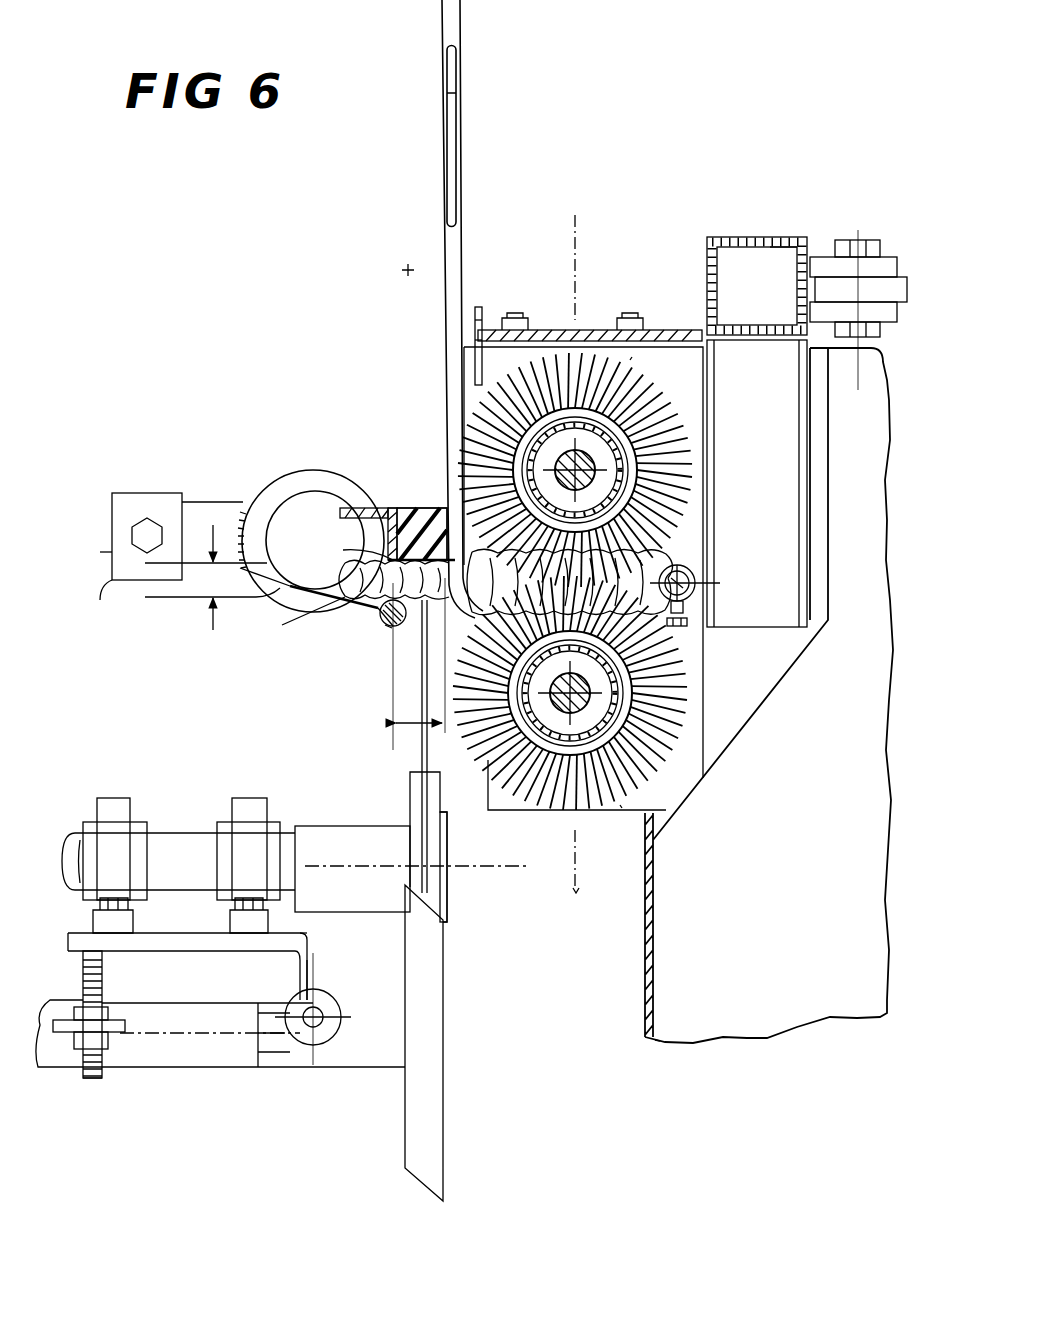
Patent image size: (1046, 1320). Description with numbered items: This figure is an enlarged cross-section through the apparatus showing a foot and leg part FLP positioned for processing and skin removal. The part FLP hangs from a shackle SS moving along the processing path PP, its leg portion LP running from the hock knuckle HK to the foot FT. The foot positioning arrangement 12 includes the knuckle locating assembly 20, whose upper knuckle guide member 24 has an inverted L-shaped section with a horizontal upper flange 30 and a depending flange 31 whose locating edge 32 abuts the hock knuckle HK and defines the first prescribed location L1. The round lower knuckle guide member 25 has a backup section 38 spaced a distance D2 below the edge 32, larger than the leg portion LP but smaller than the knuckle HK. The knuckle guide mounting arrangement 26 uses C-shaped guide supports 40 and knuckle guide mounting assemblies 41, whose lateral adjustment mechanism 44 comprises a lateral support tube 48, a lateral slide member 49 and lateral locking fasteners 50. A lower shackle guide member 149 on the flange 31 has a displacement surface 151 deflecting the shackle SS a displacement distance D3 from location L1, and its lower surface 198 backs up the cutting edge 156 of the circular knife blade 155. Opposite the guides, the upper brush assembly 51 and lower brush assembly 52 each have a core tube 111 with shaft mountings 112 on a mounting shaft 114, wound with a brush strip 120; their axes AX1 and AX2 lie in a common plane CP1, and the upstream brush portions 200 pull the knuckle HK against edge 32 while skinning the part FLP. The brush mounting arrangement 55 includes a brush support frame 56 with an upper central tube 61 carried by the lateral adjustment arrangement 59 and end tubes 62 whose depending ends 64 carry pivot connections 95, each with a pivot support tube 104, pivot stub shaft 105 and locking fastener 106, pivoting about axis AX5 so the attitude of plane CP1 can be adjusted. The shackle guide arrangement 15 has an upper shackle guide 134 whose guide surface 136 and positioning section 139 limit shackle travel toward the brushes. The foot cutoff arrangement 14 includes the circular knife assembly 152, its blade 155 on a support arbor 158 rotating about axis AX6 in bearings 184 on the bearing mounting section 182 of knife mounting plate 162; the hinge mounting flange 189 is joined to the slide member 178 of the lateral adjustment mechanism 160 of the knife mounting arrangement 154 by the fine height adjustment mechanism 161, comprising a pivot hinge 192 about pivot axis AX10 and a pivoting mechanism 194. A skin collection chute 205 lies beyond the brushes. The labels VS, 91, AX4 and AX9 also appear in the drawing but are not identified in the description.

The shackle SS is at (463, 62).
The processing path PP is at (386, 257).
The shackle guide arrangement 15 is at (486, 303).
The positioning section 139 is at (475, 323).
The guide surface 136 is at (476, 341).
The upper shackle guide 134 is at (556, 330).
The upper brush assembly 51 is at (706, 382).
The lower brush assembly 52 is at (556, 812).
The common plane CP1 is at (594, 562).
The brush strip 120 is at (672, 406).
The upstream brush portions 200 is at (637, 382).
The mounting shaft 114 is at (632, 440).
The shaft mountings 112 is at (626, 458).
The core tube 111 is at (618, 478).
The rotational axis of upper brush assembly AX1 is at (575, 479).
The rotational axis of lower brush assembly AX2 is at (570, 702).
The locating edge 32 is at (380, 563).
The displacement surface 151 is at (445, 575).
The C-shaped guide supports 40 is at (312, 472).
The upper flange 30 is at (368, 508).
The upper knuckle guide member 24 is at (392, 504).
The depending flange 31 is at (386, 533).
The lower shackle guide member 149 is at (402, 510).
The lower surface 198 is at (421, 522).
The first prescribed location L1 is at (360, 551).
The knuckle guide mounting assemblies 41 is at (138, 492).
The lateral locking fasteners 50 is at (157, 520).
The lateral adjustment mechanism 44 is at (182, 502).
The lateral slide member 49 is at (208, 532).
The lateral support tube 48 is at (95, 547).
The knuckle locating assembly 20 is at (318, 573).
The knuckle guide mounting arrangement 26 is at (108, 607).
The prescribed distance D2 is at (210, 600).
The foot and leg part FLP is at (306, 622).
The backup section 38 is at (380, 620).
The hock knuckle HK is at (384, 627).
The leg portion LP is at (407, 666).
The vertical surface VS is at (451, 655).
The displacement distance D3 is at (400, 722).
The lower knuckle guide member 25 is at (385, 630).
The foot positioning arrangement 12 is at (425, 440).
The brush support frame 56 is at (762, 236).
The upper central tube 61 is at (780, 246).
The end tubes 62 is at (808, 462).
The brush mounting arrangement 55 is at (823, 248).
The lateral adjustment arrangement 59 is at (850, 242).
The nut 91 is at (888, 236).
The pin axis AX4 is at (858, 376).
The depending ends 64 is at (786, 630).
The skin collection chute 205 is at (727, 1030).
The pivot connections 95 is at (696, 570).
The foot FT is at (703, 560).
The pivot support tube 104 is at (695, 571).
The pivot axis AX5 is at (703, 584).
The pivot stub shaft 105 is at (688, 594).
The locking fastener 106 is at (689, 628).
The bearings 184 is at (238, 812).
The knife support arbor 158 is at (378, 832).
The rotational axis of knife support arbor AX6 is at (417, 854).
The bearing mounting section 182 is at (198, 952).
The knife mounting plate 162 is at (309, 944).
The hinge mounting flange 189 is at (312, 962).
The pivoting mechanism 194 is at (104, 974).
The knife mounting arrangement 154 is at (196, 1072).
The lateral adjustment slide member 178 is at (142, 1070).
The lateral adjustment mechanism 160 is at (263, 1074).
The pivot hinge 192 is at (330, 1022).
The pivot axis AX10 is at (316, 1048).
The block axis AX9 is at (210, 1050).
The fine height adjustment mechanism 161 is at (88, 1082).
The foot cutoff arrangement 14 is at (446, 1052).
The circular knife blade 155 is at (410, 780).
The cutting edge 156 is at (421, 757).
The circular knife assembly 152 is at (438, 884).